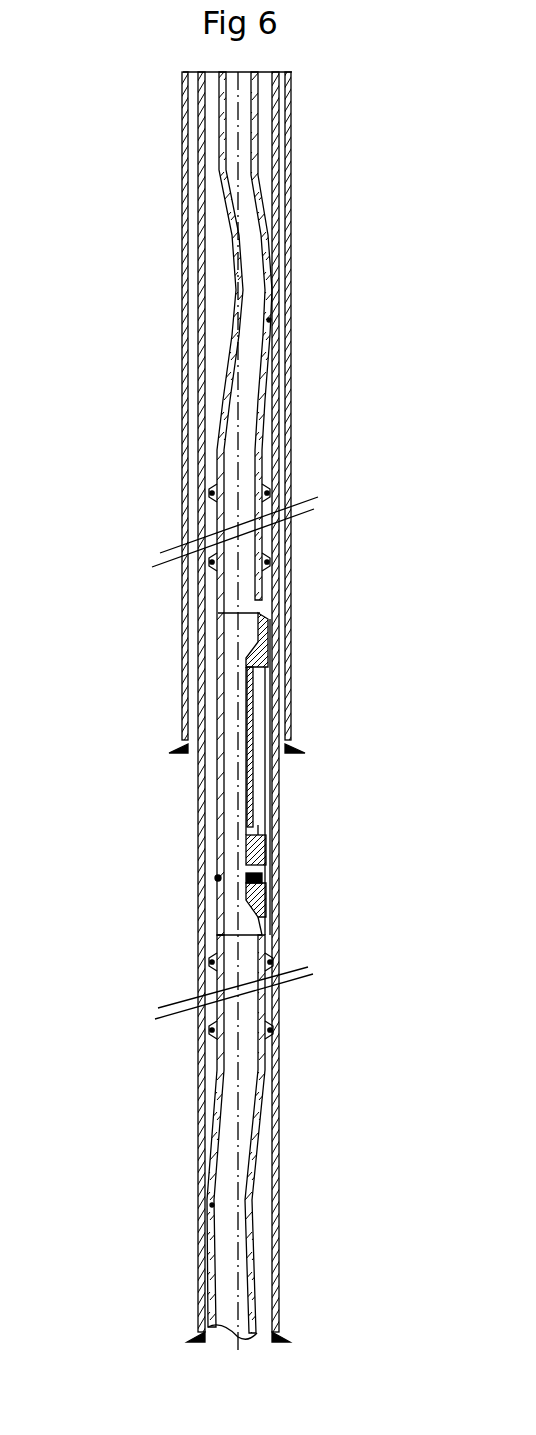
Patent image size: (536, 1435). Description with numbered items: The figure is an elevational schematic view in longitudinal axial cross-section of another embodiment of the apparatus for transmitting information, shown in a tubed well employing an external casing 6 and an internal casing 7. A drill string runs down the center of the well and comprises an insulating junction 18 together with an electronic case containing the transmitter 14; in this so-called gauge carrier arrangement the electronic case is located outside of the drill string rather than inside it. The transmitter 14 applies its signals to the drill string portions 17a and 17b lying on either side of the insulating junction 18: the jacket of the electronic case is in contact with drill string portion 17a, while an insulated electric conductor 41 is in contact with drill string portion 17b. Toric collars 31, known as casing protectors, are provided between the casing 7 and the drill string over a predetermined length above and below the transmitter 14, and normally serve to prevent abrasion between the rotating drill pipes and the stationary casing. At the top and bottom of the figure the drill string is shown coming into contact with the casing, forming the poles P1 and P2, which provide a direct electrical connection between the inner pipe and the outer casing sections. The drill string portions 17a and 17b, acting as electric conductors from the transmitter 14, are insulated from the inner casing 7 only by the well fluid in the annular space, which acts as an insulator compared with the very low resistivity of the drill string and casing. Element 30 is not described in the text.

The external casing 6 is at (186, 321).
The internal casing 7 is at (200, 161).
The drill string portion 17a is at (222, 425).
The drill string portion 17b is at (262, 1127).
The transmitter 14 is at (264, 791).
The seal element 30 is at (217, 654).
The insulated electric conductor 41 is at (263, 858).
The insulating junction 18 is at (216, 878).
The toric collar 31 is at (210, 494).
The pole P1 is at (269, 320).
The pole P2 is at (211, 1205).